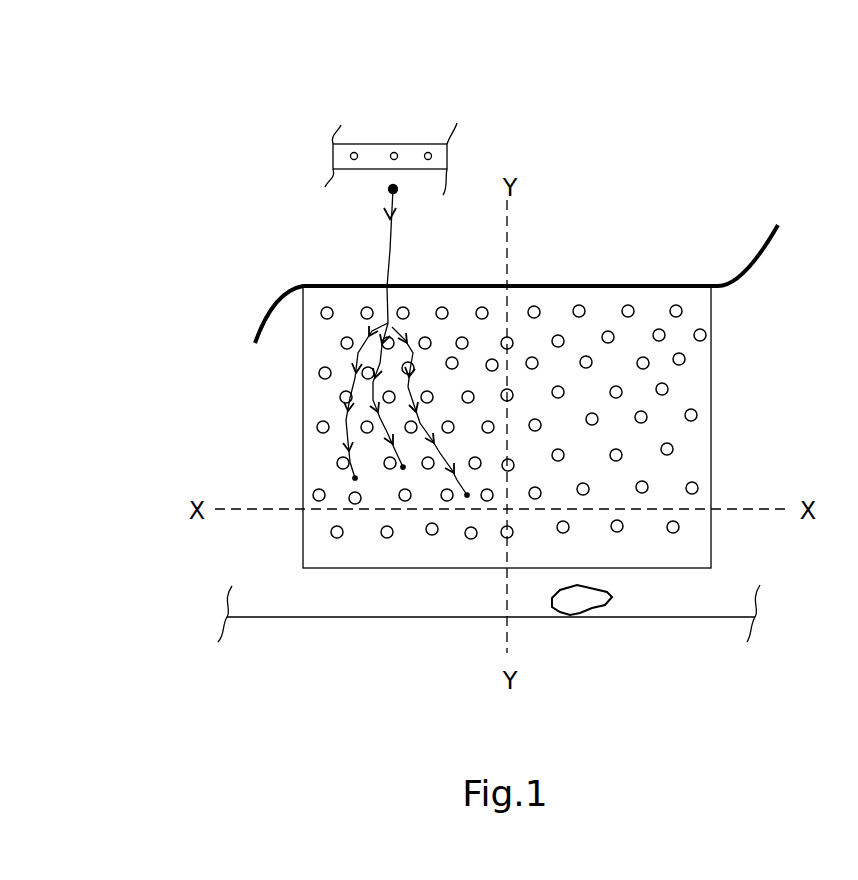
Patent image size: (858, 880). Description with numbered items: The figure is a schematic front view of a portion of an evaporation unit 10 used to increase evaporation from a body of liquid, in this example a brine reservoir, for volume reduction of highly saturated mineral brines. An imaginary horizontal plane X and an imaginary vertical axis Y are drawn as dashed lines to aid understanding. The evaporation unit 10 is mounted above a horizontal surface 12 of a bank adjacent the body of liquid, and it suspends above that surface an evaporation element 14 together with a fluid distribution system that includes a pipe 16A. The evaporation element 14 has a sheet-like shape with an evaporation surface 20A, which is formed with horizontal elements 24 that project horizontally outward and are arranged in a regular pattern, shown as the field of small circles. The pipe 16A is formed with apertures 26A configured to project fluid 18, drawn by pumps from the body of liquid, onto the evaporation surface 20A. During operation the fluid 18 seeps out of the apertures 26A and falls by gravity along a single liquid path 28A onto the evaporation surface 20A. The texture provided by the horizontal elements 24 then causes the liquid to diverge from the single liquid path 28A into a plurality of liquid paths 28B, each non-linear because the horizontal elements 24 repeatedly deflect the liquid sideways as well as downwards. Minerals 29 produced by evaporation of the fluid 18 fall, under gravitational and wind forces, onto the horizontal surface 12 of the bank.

The evaporation unit 10 is at (252, 146).
The horizontal surface 12 is at (645, 617).
The evaporation element 14 is at (292, 379).
The pipe 16A is at (352, 170).
The fluid 18 is at (394, 192).
The evaporation surface 20A is at (692, 548).
The horizontal elements 24 is at (666, 389).
The apertures 26A is at (395, 150).
The single liquid path 28A is at (390, 248).
The plurality of liquid paths 28B is at (420, 420).
The minerals 29 is at (583, 604).